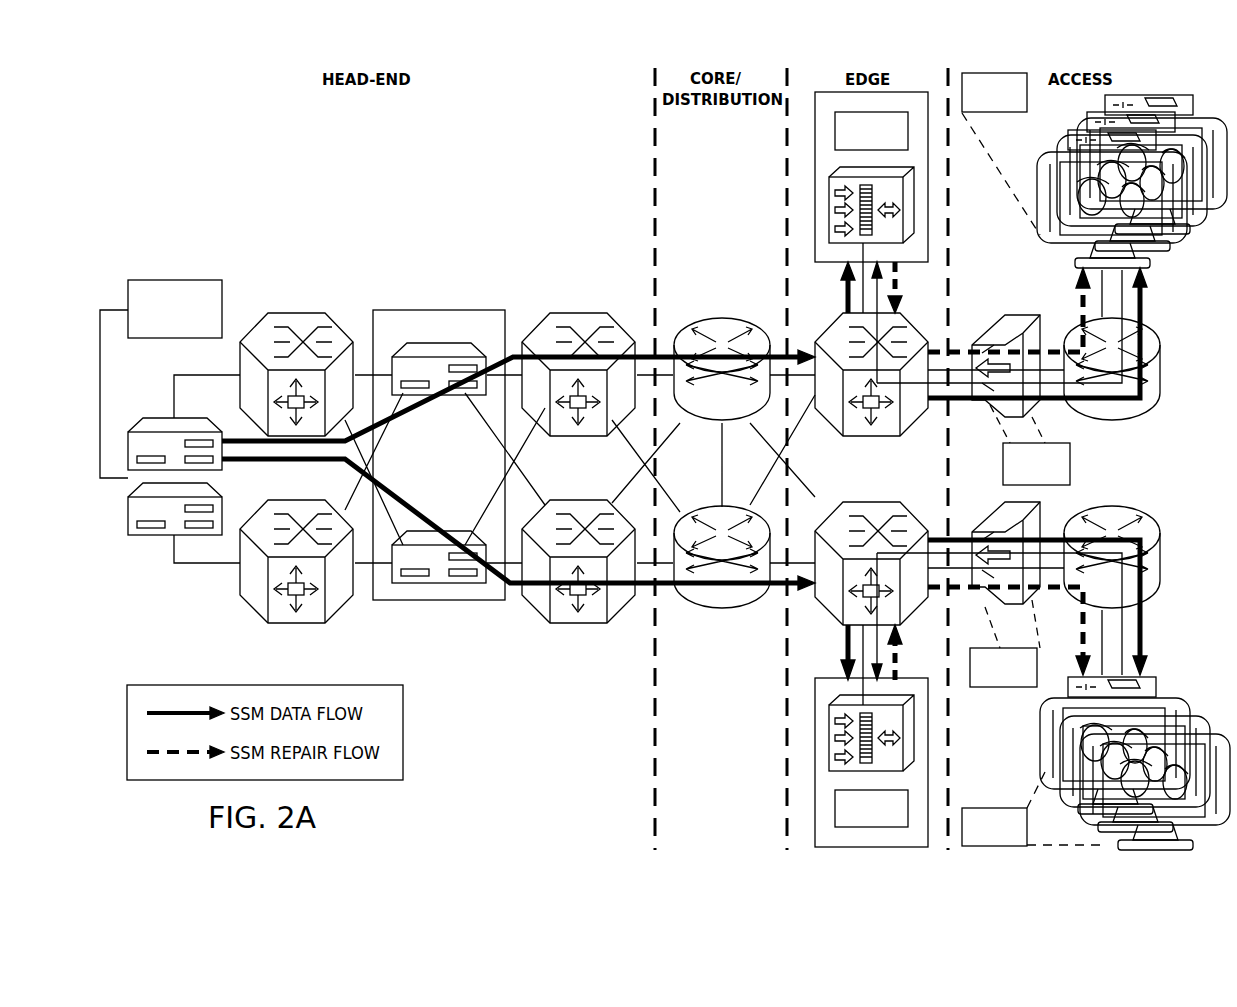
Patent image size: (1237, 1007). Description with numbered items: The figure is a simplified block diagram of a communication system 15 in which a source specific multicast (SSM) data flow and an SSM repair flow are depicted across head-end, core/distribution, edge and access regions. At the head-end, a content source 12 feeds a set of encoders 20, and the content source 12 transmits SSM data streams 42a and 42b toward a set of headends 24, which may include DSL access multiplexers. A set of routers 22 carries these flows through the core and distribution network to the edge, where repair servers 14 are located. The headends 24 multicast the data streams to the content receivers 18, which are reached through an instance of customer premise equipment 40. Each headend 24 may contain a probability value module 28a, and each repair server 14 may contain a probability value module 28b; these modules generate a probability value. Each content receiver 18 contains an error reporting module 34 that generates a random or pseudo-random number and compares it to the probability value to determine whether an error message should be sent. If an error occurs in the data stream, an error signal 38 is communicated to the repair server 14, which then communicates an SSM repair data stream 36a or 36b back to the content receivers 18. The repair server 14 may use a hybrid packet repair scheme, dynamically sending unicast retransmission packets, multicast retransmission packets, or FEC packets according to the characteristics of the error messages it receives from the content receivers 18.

The content source 12 is at (170, 280).
The repair server 14 is at (805, 150).
The communication system 15 is at (540, 132).
The content receiver 18 is at (1197, 235).
The encoder 20 is at (156, 418).
The router 22 is at (293, 313).
The headend 24 is at (434, 310).
The probability value module 28a is at (1020, 546).
The probability value module 28b is at (871, 469).
The error reporting module 34 is at (1033, 459).
The SSM repair data stream 36a is at (912, 290).
The SSM repair data stream 36b is at (925, 649).
The error signal 38 is at (880, 286).
The customer premise equipment 40 is at (1162, 358).
The data stream 42a is at (424, 398).
The data stream 42b is at (432, 487).